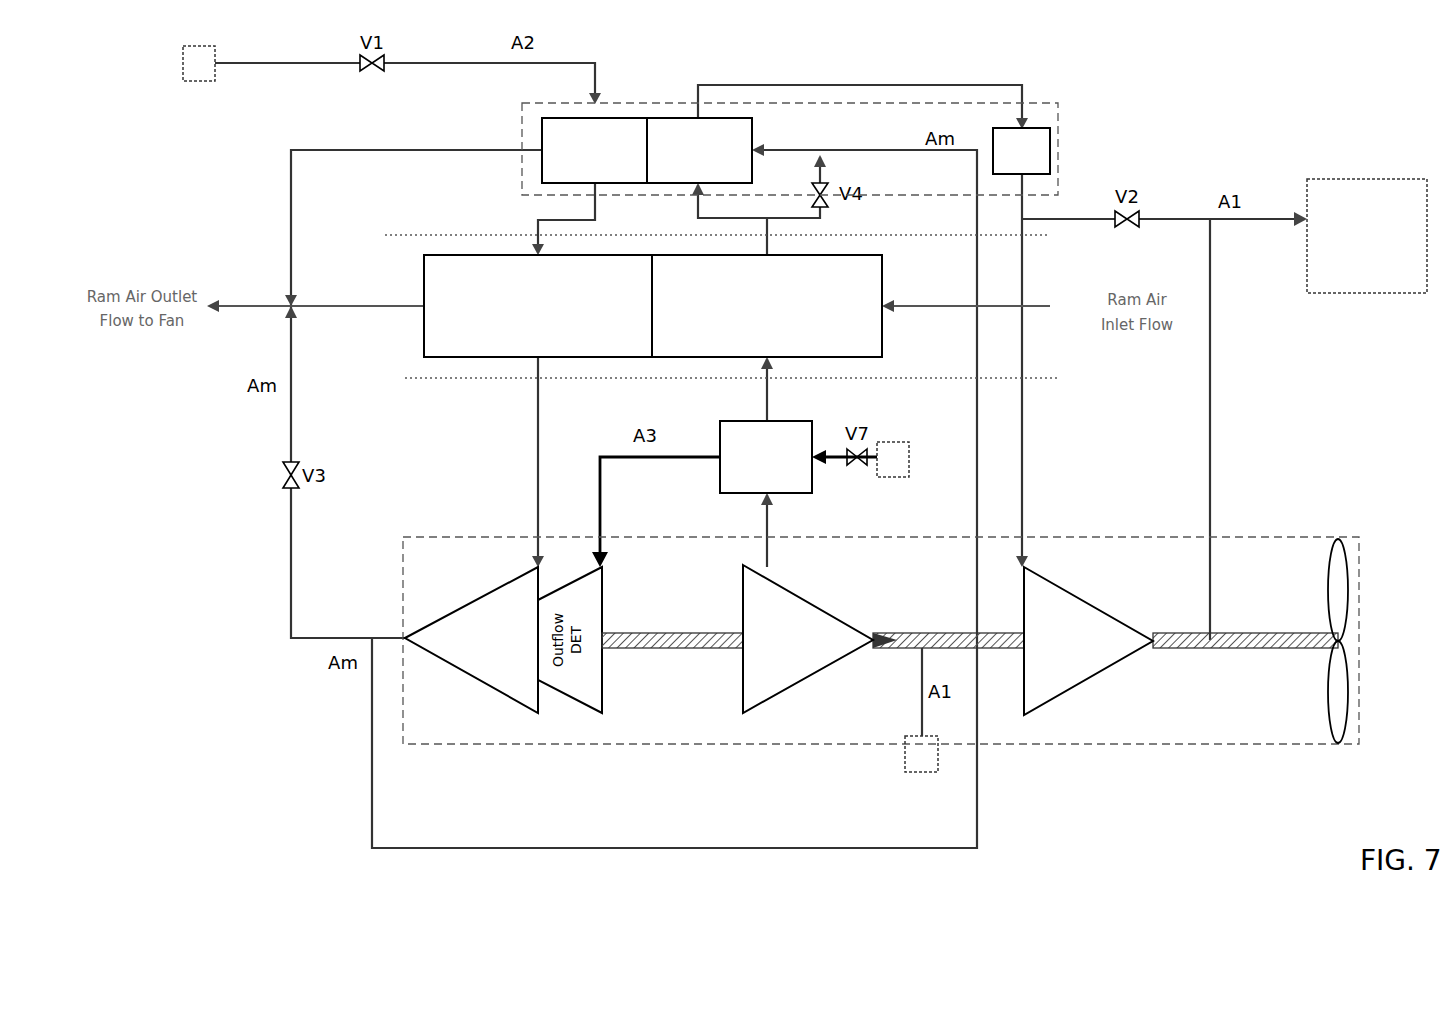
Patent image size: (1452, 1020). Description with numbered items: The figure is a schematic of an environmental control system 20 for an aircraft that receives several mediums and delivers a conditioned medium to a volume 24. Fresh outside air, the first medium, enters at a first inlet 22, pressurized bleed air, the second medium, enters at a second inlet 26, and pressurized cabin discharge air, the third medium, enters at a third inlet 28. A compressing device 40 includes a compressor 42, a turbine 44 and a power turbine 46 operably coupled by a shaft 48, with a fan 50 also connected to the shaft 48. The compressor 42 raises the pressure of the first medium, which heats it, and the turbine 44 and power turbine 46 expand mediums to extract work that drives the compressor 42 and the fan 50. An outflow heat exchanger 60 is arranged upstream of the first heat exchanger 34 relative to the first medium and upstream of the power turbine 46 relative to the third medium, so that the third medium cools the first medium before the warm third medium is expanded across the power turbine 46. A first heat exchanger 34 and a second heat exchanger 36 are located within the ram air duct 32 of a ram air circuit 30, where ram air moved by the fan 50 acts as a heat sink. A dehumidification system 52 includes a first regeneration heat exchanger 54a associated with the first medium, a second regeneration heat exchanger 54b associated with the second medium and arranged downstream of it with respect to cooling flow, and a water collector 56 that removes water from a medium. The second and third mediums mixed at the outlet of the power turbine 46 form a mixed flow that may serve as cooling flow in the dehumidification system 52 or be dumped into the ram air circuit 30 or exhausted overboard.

The environmental control system 20 is at (1220, 80).
The first inlet 22 is at (912, 772).
The volume 24 is at (1367, 236).
The second inlet 26 is at (191, 70).
The third inlet 28 is at (897, 452).
The ram air circuit 30 is at (1062, 388).
The ram air duct 32 is at (422, 380).
The first heat exchanger 34 is at (767, 306).
The second heat exchanger 36 is at (538, 306).
The compressing device 40 is at (1188, 748).
The compressor 42 is at (775, 672).
The turbine 44 is at (1052, 680).
The power turbine 46 is at (546, 716).
The shaft 48 is at (653, 650).
The fan 50 is at (1333, 590).
The dehumidification system 52 is at (677, 98).
The first regeneration heat exchanger 54a is at (740, 133).
The second regeneration heat exchanger 54b is at (567, 138).
The water collector 56 is at (1052, 133).
The outflow heat exchanger 60 is at (785, 478).